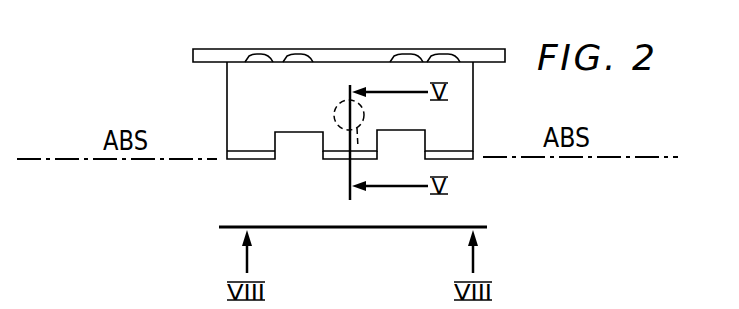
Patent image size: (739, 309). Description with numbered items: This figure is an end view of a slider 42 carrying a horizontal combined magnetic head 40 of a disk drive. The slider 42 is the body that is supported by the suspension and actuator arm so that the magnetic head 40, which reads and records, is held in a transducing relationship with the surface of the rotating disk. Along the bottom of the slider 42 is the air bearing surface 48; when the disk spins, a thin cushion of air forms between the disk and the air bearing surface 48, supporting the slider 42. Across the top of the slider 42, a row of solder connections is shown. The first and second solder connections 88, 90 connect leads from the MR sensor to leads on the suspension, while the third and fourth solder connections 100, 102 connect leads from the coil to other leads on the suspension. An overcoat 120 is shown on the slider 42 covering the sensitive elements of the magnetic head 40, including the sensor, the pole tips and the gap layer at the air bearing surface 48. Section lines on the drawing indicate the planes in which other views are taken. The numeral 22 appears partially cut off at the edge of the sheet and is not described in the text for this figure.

The slider 42 is at (227, 88).
The first solder connection 88 is at (258, 53).
The third solder connection 100 is at (300, 53).
The fourth solder connection 102 is at (407, 53).
The second solder connection 90 is at (447, 53).
The overcoat 120 is at (238, 160).
The air bearing surface 48 is at (262, 160).
The horizontal combined magnetic head 40 is at (340, 128).
The suspension 22 is at (630, 303).